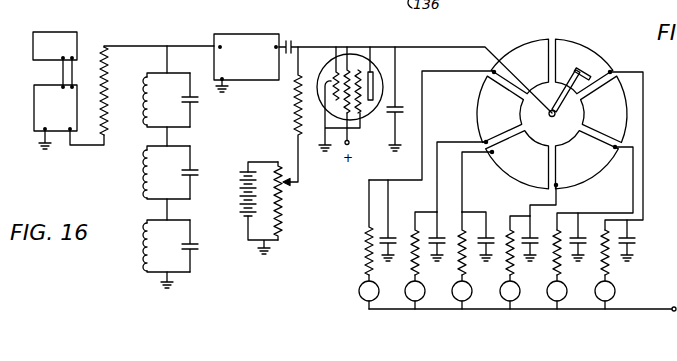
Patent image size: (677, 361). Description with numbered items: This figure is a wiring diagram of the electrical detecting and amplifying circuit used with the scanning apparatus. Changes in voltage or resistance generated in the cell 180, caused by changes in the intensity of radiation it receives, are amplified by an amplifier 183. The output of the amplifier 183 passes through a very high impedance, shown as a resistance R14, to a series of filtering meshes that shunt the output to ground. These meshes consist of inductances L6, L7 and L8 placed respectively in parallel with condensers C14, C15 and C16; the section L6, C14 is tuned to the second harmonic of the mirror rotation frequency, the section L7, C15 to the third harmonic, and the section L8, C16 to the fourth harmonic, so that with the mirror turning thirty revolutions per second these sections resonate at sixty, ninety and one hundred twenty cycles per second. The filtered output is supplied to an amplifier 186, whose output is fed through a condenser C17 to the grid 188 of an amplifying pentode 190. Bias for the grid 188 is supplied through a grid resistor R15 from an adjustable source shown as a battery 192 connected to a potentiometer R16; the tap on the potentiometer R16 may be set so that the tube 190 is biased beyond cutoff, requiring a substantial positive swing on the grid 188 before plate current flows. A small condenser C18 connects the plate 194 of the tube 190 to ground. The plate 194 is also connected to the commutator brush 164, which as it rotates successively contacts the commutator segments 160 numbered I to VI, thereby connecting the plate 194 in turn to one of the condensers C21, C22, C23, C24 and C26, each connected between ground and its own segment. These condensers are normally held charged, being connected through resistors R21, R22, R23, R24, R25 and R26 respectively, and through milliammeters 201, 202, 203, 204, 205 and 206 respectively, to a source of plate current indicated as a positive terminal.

The cell 180 is at (69, 32).
The amplifier 183 is at (58, 128).
The resistance R14 is at (109, 72).
The inductance L6 is at (143, 105).
The condenser C14 is at (192, 99).
The inductance L7 is at (143, 172).
The condenser C15 is at (192, 170).
The inductance L8 is at (143, 245).
The condenser C16 is at (192, 240).
The amplifier 186 is at (238, 35).
The condenser C17 is at (292, 44).
The grid resistor R15 is at (292, 110).
The battery 192 is at (241, 198).
The potentiometer R16 is at (282, 193).
The grid 188 is at (336, 70).
The amplifying pentode 190 is at (350, 50).
The plate 194 is at (372, 52).
The condenser C18 is at (396, 109).
The commutator segments 160 is at (575, 43).
The commutator brush 164 is at (611, 74).
The condenser C21 is at (387, 233).
The resistor R21 is at (367, 239).
The milliammeter 201 is at (358, 292).
The condenser C22 is at (437, 232).
The resistor R22 is at (414, 238).
The milliammeter 202 is at (422, 295).
The condenser C23 is at (484, 238).
The resistor R23 is at (462, 237).
The milliammeter 203 is at (470, 295).
The condenser C24 is at (531, 258).
The resistor R24 is at (508, 232).
The milliammeter 204 is at (517, 295).
The resistor R25 is at (560, 232).
The condenser C26 is at (579, 259).
The milliammeter 205 is at (565, 295).
The resistor R26 is at (612, 258).
The milliammeter 206 is at (613, 295).